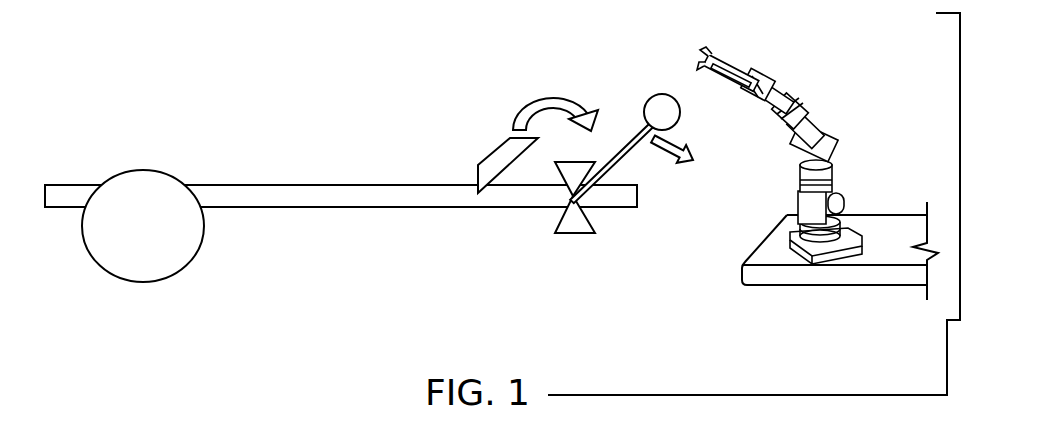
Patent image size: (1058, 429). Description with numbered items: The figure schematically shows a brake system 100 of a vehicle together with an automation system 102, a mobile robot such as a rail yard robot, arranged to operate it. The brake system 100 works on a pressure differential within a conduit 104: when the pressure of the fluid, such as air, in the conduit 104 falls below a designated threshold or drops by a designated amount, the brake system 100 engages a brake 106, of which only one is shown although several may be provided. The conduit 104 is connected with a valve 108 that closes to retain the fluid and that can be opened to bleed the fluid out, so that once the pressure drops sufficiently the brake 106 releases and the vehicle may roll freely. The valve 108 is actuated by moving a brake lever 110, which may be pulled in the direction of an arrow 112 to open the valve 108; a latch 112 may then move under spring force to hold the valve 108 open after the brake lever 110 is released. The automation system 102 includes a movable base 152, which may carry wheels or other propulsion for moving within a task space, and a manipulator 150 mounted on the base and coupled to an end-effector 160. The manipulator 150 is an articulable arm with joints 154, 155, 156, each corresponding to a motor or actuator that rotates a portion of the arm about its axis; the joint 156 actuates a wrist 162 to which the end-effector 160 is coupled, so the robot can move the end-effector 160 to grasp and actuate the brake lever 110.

The brake system 100 is at (273, 303).
The automation system 102 is at (831, 273).
The conduit 104 is at (283, 184).
The brake 106 is at (203, 247).
The valve 108 is at (573, 237).
The brake lever 110 is at (636, 135).
The arrow 112 is at (491, 150).
The manipulator 150 is at (809, 141).
The movable base 152 is at (753, 279).
The joint 154 is at (847, 200).
The joint 155 is at (829, 142).
The joint 156 is at (807, 70).
The end-effector 160 is at (738, 66).
The wrist 162 is at (736, 95).